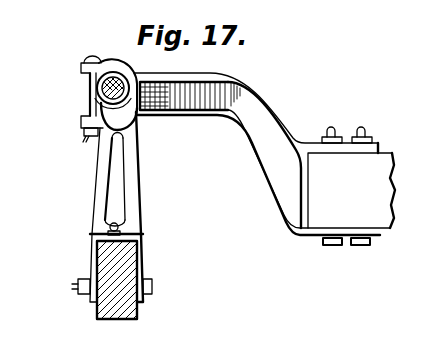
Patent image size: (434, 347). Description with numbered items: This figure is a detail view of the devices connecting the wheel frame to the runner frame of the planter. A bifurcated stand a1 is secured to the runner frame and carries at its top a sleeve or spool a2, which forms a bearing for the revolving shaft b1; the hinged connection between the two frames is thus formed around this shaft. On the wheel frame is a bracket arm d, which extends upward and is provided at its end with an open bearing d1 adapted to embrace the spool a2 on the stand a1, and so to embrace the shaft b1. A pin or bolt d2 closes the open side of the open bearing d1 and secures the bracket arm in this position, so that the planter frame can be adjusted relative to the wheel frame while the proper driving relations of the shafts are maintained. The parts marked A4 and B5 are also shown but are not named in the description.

The open bearing d1 is at (110, 62).
The pin or bolt d2 is at (88, 90).
The sleeve or spool a2 is at (102, 97).
The revolving shaft b1 is at (134, 73).
The bracket arm d is at (239, 108).
The bifurcated stand a1 is at (100, 173).
The lower block A4 is at (120, 266).
The block attached to arm B5 is at (351, 199).